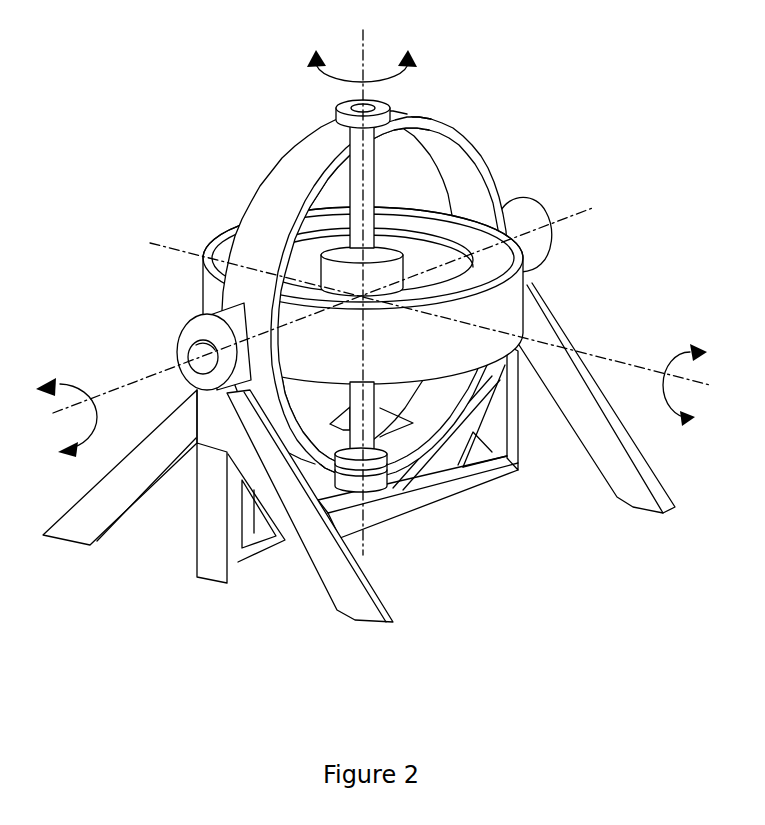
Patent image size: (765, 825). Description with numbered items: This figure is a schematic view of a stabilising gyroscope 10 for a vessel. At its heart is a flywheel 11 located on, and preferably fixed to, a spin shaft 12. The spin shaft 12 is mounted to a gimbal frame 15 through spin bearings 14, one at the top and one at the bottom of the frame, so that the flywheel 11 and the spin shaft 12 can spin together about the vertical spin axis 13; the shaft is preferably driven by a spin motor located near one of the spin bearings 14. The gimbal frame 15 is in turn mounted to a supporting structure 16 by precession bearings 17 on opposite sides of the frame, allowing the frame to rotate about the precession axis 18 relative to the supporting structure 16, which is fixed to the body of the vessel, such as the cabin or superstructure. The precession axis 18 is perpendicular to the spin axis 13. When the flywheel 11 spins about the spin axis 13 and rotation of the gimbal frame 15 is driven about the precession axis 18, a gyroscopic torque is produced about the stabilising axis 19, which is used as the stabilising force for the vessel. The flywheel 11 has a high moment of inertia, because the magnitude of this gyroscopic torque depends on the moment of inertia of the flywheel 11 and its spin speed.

The stabilising gyroscope 10 is at (373, 320).
The flywheel 11 is at (510, 293).
The spin shaft 12 is at (358, 170).
The spin axis 13 is at (365, 46).
The spin bearings 14 is at (380, 110).
The gimbal frame 15 is at (268, 205).
The supporting structure 16 is at (496, 410).
The precession bearings 17 is at (526, 234).
The precession axis 18 is at (130, 383).
The stabilising axis 19 is at (647, 370).